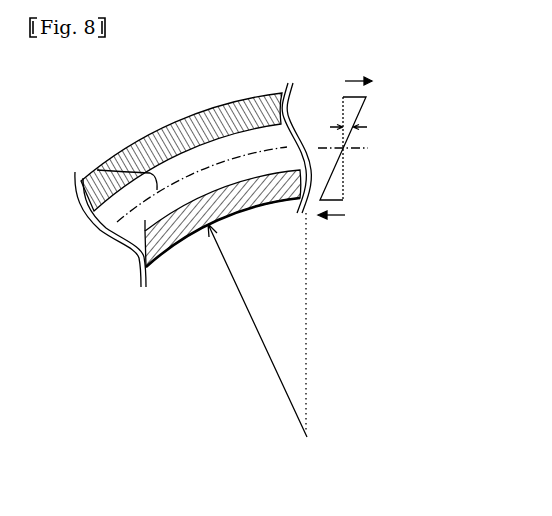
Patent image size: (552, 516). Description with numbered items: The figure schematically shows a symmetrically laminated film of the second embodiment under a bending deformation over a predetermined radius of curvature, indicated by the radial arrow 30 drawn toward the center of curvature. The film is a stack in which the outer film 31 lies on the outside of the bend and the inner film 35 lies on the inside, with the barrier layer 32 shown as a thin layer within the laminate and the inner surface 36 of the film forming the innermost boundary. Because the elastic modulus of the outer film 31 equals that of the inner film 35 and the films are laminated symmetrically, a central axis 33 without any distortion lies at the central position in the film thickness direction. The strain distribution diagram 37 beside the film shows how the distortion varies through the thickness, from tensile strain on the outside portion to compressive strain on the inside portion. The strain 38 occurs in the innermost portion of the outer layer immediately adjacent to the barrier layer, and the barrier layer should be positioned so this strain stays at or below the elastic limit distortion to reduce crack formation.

The bending direction / radial arrow 30 is at (257, 325).
The outer film 31 is at (228, 101).
The upper layer 32 is at (168, 125).
The central axis 33 is at (97, 170).
The inner film 35 is at (249, 206).
The bottom surface 36 is at (150, 263).
The strain distribution diagram 37 is at (415, 138).
The strain 38 is at (356, 127).